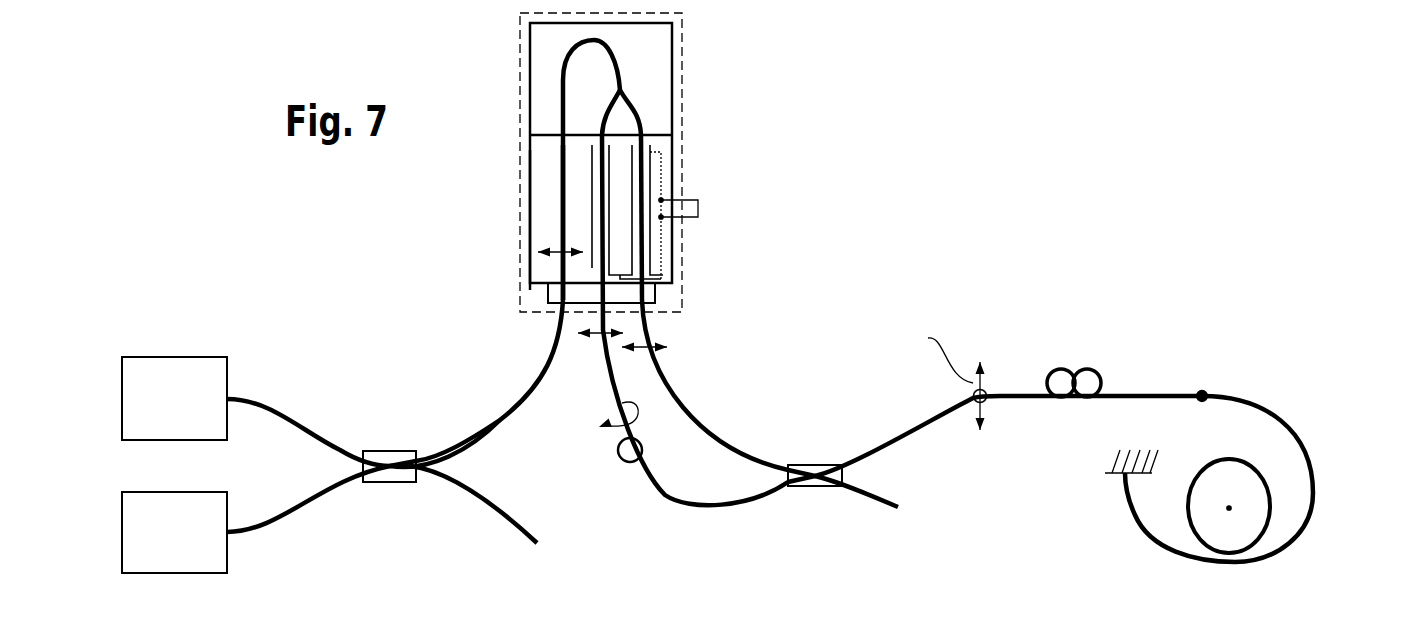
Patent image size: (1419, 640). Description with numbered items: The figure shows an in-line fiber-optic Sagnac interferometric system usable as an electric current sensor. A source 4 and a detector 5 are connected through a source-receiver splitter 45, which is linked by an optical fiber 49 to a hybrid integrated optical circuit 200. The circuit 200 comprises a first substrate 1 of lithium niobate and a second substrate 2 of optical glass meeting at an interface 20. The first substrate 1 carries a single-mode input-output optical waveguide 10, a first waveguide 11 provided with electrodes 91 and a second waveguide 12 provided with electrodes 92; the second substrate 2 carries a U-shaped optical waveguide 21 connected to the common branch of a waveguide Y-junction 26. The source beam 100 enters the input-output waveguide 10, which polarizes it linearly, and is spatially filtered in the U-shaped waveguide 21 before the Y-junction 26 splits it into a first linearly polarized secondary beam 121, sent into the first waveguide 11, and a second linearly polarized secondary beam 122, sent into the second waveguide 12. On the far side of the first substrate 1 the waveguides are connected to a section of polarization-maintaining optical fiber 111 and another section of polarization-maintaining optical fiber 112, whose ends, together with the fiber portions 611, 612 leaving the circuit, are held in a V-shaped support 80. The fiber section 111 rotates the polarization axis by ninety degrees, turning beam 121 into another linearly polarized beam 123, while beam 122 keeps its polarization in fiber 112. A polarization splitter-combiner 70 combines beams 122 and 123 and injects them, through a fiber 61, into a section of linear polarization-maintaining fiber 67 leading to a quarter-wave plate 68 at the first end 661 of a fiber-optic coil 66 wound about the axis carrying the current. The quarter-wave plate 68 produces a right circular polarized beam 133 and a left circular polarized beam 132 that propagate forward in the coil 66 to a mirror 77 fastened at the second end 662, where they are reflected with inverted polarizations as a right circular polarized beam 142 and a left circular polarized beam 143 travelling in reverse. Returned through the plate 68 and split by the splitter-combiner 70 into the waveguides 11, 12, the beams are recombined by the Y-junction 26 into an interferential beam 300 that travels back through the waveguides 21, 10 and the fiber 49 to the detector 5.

The first substrate 1 is at (529, 160).
The second substrate 2 is at (529, 85).
The source 4 is at (122, 399).
The detector 5 is at (122, 533).
The input-output optical waveguide 10 is at (565, 185).
The first waveguide 11 is at (600, 278).
The second waveguide 12 is at (634, 278).
The interface 20 is at (540, 134).
The U-shaped optical waveguide 21 is at (572, 50).
The waveguide Y-junction 26 is at (637, 101).
The source-receiver splitter 45 is at (388, 450).
The optical fiber 49 is at (530, 393).
The optical fiber 61 is at (850, 464).
The fiber-optic coil 66 is at (1262, 470).
The section of linear polarization-maintaining fiber 67 is at (1083, 367).
The quarter-wave plate 68 is at (1200, 389).
The polarization splitter-combiner 70 is at (815, 487).
The mirror 77 is at (1112, 477).
The V-shaped support 80 is at (656, 293).
The electrodes 91 is at (591, 213).
The electrodes 92 is at (651, 245).
The source beam 100 is at (287, 420).
The section of optical fiber 111 is at (712, 509).
The section of polarization-maintaining optical fiber 112 is at (707, 437).
The first linearly polarized secondary beam 121 is at (590, 340).
The second linearly polarized secondary beam 122 is at (660, 349).
The other linearly polarized light beam 123 is at (617, 449).
The left circular polarized beam 132 is at (1258, 422).
The right circular polarized beam 133 is at (1297, 415).
The right circular polarized beam 142 is at (1156, 530).
The left circular polarized beam 143 is at (1166, 540).
The hybrid integrated optical circuit 200 is at (682, 90).
The interferential beam 300 is at (288, 506).
The first fiber section 611 is at (557, 332).
The second fiber section 612 is at (642, 312).
The first end 661 is at (1207, 386).
The second end 662 is at (1121, 479).